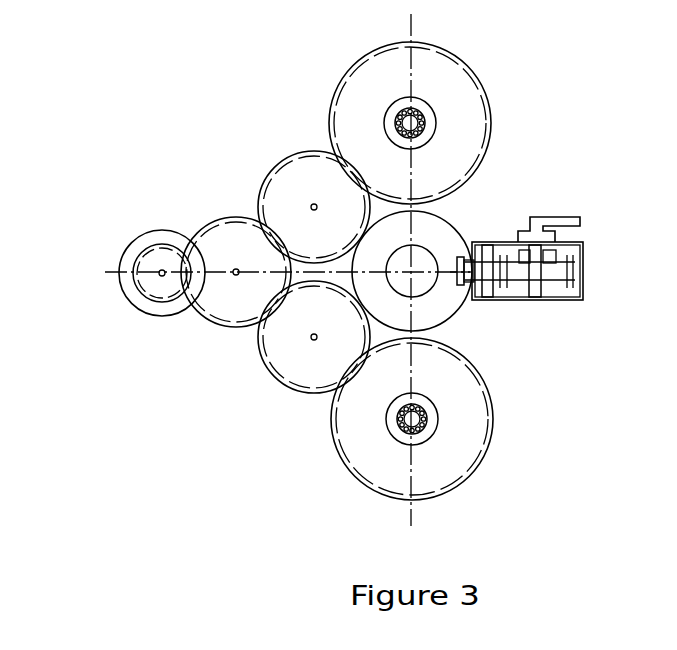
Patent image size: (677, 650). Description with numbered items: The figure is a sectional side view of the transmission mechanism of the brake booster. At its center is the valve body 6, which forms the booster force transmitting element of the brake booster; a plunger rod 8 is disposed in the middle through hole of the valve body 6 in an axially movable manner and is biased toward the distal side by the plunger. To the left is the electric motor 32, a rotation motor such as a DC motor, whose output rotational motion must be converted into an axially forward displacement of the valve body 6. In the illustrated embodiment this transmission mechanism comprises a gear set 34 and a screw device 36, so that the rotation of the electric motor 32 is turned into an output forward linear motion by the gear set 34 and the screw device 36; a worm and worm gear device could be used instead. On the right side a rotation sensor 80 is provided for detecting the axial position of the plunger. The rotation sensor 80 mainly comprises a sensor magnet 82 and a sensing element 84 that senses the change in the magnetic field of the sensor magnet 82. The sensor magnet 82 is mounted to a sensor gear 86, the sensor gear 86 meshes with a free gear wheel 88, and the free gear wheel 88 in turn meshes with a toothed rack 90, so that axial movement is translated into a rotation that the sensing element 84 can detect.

The valve body 6 is at (432, 312).
The plunger rod 8 is at (422, 287).
The electric motor 32 is at (122, 252).
The gear set 34 is at (253, 157).
The screw device 36 is at (439, 108).
The rotation sensor 80 is at (546, 220).
The sensor magnet 82 is at (557, 257).
The sensing element 84 is at (573, 202).
The sensor gear 86 is at (585, 258).
The free gear wheel 88 is at (498, 258).
The toothed rack 90 is at (465, 248).